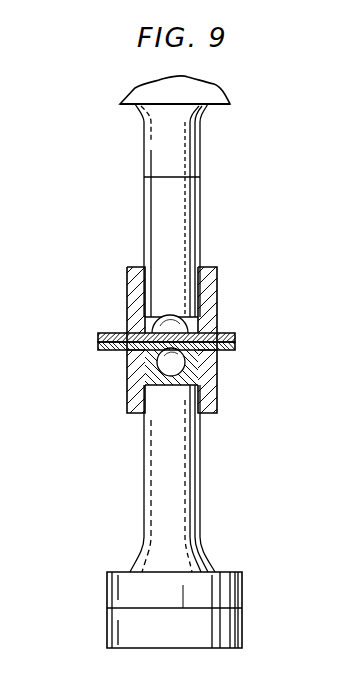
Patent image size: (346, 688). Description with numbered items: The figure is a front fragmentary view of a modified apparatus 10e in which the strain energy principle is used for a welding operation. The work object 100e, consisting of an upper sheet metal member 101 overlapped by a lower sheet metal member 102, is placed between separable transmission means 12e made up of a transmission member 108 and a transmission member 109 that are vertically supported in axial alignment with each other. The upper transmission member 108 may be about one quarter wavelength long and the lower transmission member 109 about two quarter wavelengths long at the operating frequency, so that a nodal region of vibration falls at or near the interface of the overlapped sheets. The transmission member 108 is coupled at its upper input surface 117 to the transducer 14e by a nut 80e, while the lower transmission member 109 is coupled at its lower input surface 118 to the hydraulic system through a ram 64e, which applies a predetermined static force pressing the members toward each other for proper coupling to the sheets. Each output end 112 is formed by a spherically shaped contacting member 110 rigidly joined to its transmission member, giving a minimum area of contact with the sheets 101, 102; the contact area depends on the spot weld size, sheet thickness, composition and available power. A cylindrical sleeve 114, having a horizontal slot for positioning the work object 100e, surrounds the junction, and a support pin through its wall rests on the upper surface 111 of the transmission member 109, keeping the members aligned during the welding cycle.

The welding apparatus 10e is at (116, 510).
The separable transmission means 12e is at (180, 478).
The head 14e is at (268, 88).
The ram 64e is at (206, 610).
The nut 80e is at (195, 188).
The work object 100e is at (172, 342).
The upper sheet metal member 101 is at (98, 337).
The lower sheet metal member 102 is at (98, 348).
The upper transmission member 108 is at (196, 238).
The lower transmission member 109 is at (160, 480).
The spherically shaped contacting member 110 is at (200, 326).
The upper surface of transmission member 109 111 is at (215, 355).
The output end 112 is at (150, 328).
The cylindrical sleeve 114 is at (217, 298).
The input surface 117 is at (155, 215).
The input surface 118 is at (222, 612).